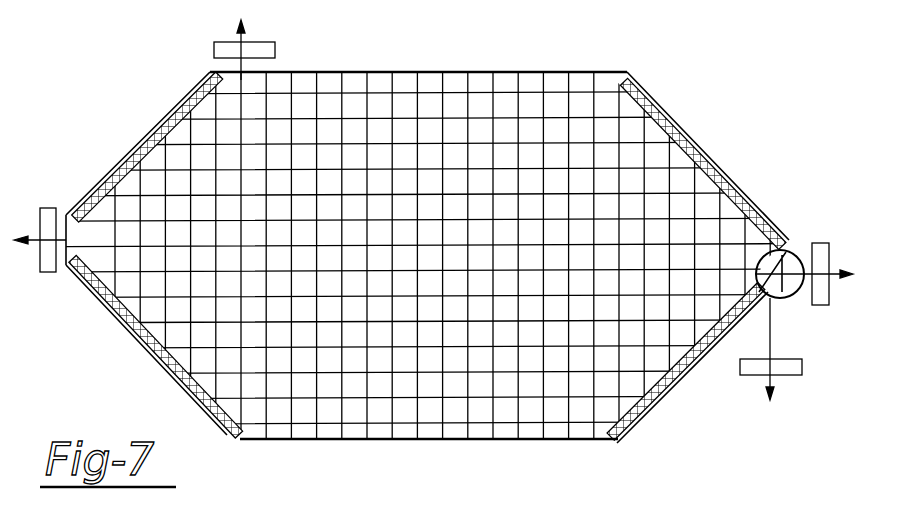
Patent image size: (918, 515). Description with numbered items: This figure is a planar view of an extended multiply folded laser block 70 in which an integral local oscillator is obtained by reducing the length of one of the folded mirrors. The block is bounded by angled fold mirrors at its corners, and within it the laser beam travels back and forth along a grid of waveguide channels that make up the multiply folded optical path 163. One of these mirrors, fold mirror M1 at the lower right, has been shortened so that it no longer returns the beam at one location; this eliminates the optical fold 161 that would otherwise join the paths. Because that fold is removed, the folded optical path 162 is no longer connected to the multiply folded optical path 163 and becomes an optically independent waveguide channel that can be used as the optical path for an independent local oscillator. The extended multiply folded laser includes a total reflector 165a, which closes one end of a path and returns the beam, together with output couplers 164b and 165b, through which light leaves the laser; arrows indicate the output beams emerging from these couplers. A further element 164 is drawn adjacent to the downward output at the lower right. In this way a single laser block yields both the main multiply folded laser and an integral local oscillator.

The multipass optical cell 70 is at (430, 286).
The optical fold 161 is at (803, 250).
The folded optical path 162 is at (27, 238).
The multiply folded optical path 163 is at (557, 145).
The detector 164 is at (802, 368).
The output coupler 164b is at (50, 258).
The total reflector 165a is at (821, 289).
The output coupler 165b is at (272, 51).
The fold mirror M1 is at (658, 412).